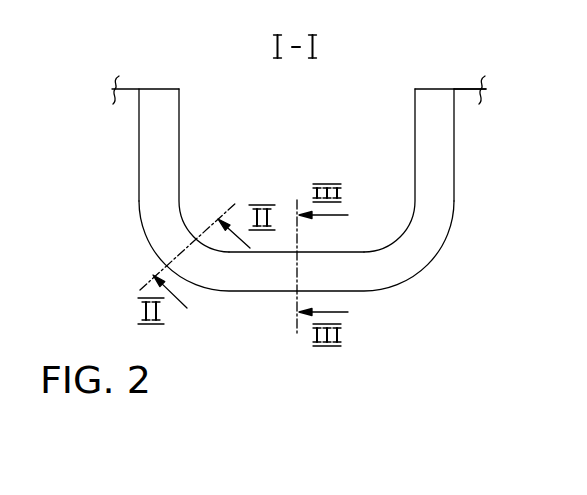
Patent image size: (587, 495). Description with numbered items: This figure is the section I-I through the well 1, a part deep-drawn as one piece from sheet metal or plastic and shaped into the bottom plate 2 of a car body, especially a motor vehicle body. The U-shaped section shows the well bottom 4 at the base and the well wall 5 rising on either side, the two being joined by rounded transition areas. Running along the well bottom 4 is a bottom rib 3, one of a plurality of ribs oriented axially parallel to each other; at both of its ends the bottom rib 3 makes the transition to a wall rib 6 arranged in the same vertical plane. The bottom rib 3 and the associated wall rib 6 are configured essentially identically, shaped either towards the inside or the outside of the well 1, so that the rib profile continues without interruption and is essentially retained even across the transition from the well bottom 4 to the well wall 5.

The well 1 is at (126, 130).
The bottom plate 2 is at (464, 88).
The bottom rib 3 is at (384, 289).
The well bottom 4 is at (359, 239).
The well wall 5 is at (402, 129).
The wall rib 6 is at (452, 151).